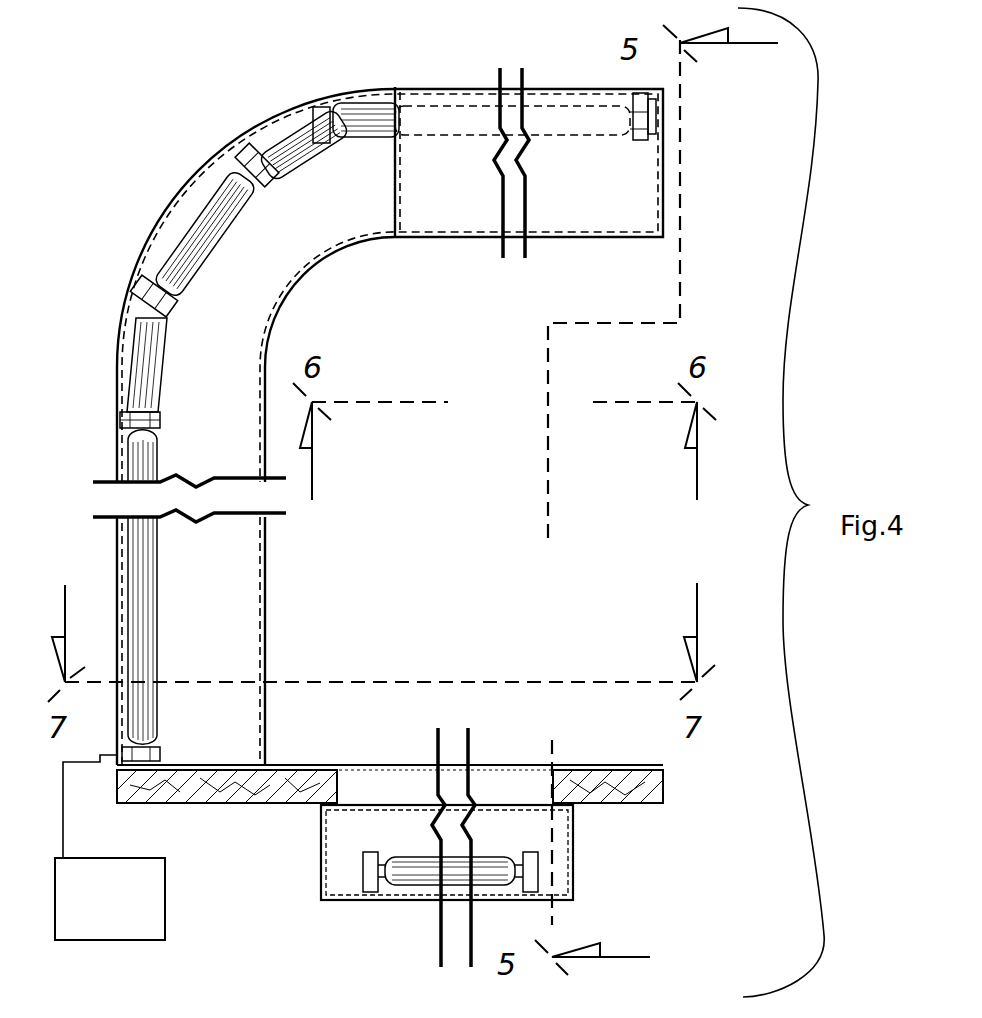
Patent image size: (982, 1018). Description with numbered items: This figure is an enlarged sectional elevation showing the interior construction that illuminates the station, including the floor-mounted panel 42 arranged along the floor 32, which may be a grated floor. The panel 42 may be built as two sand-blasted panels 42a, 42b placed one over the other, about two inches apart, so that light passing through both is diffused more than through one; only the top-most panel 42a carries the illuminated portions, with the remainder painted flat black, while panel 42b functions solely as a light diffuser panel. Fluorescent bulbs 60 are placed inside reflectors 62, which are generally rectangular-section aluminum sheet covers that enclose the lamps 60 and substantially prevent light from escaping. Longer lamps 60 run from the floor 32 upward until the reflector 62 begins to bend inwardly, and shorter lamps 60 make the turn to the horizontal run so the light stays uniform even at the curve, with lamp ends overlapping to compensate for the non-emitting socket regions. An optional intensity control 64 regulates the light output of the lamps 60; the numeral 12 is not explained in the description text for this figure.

The lighting fixture 12 is at (503, 1017).
The floor 32 is at (283, 775).
The panel 42 is at (346, 905).
The top-most panel 42a is at (388, 765).
The light diffuser panel 42b is at (442, 790).
The fluorescent bulb 60 is at (120, 458).
The reflector 62 is at (330, 100).
The intensity control 64 is at (68, 946).